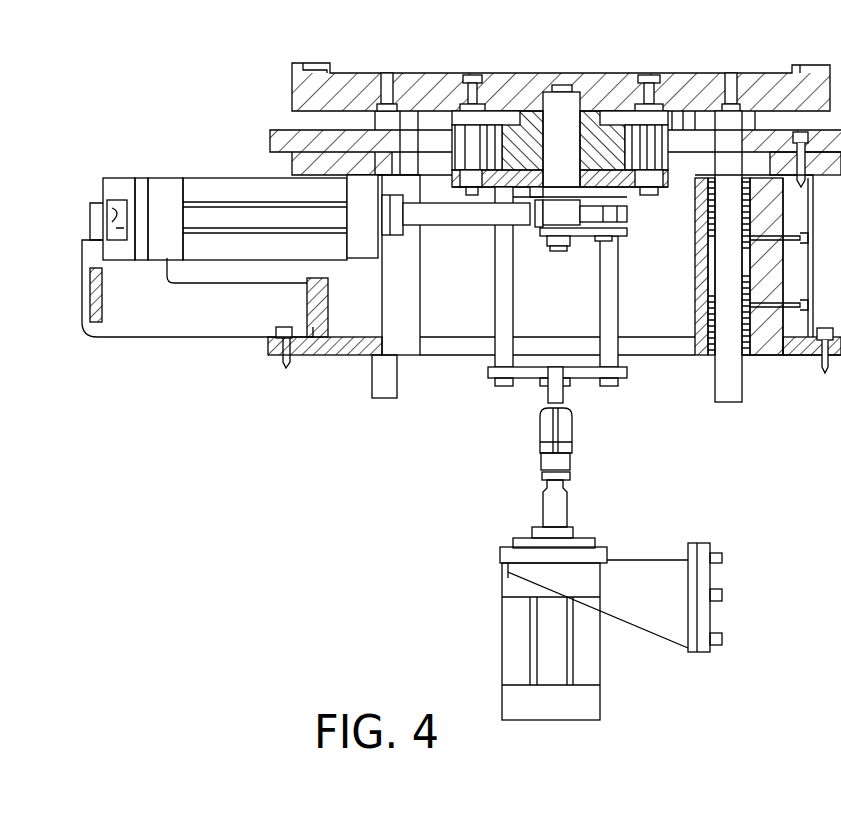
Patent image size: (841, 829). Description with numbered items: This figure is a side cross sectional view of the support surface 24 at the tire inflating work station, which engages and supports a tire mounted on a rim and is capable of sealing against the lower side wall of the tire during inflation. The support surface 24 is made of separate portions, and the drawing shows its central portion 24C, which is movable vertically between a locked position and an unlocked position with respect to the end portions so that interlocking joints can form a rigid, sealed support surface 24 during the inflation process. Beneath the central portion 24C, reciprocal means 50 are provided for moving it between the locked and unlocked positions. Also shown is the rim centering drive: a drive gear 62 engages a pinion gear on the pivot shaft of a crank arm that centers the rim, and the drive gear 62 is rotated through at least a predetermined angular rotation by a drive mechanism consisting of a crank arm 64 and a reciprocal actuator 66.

The support surface 24 is at (447, 71).
The central portion 24C is at (680, 77).
The drive gear 62 is at (512, 130).
The crank arm 64 is at (628, 237).
The reciprocal actuator 66 is at (193, 177).
The reciprocal means 50 is at (489, 623).